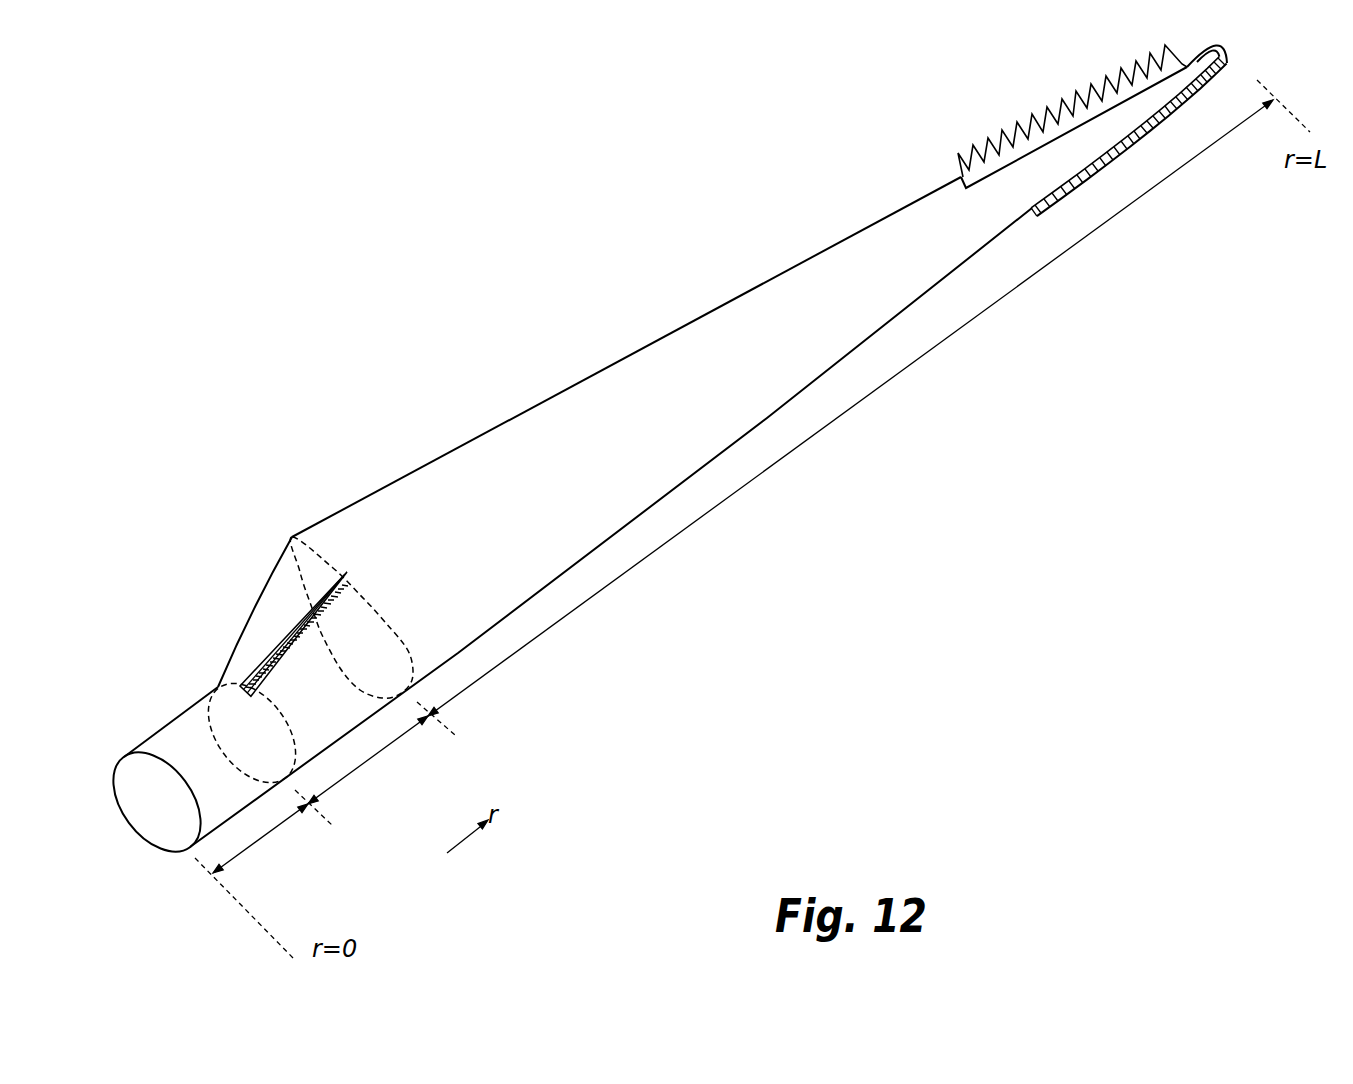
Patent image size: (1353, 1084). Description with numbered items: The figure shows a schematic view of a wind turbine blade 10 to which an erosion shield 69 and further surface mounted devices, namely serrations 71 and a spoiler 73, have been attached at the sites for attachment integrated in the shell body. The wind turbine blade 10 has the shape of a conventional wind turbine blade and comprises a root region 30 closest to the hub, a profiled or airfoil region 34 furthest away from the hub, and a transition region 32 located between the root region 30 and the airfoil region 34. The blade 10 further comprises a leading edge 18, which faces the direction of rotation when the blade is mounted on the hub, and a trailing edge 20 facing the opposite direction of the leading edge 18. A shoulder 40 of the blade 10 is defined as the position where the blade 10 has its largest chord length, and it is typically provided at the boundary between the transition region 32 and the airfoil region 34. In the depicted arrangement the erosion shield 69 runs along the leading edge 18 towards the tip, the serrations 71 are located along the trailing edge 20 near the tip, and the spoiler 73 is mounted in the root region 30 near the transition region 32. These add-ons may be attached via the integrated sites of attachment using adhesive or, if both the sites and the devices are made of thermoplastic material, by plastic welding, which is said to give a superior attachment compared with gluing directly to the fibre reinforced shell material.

The wind turbine blade 10 is at (478, 300).
The leading edge 18 is at (890, 324).
The trailing edge 20 is at (905, 210).
The root region 30 is at (268, 836).
The transition region 32 is at (373, 757).
The airfoil region 34 is at (778, 462).
The shoulder 40 is at (292, 537).
The erosion shield 69 is at (1193, 103).
The serrations 71 is at (997, 150).
The spoiler 73 is at (284, 638).